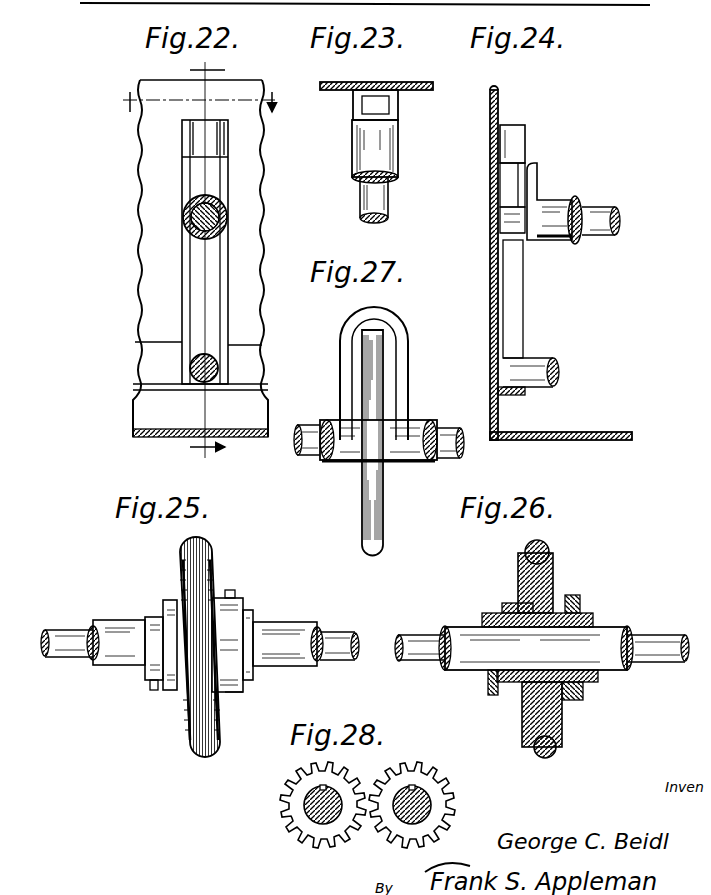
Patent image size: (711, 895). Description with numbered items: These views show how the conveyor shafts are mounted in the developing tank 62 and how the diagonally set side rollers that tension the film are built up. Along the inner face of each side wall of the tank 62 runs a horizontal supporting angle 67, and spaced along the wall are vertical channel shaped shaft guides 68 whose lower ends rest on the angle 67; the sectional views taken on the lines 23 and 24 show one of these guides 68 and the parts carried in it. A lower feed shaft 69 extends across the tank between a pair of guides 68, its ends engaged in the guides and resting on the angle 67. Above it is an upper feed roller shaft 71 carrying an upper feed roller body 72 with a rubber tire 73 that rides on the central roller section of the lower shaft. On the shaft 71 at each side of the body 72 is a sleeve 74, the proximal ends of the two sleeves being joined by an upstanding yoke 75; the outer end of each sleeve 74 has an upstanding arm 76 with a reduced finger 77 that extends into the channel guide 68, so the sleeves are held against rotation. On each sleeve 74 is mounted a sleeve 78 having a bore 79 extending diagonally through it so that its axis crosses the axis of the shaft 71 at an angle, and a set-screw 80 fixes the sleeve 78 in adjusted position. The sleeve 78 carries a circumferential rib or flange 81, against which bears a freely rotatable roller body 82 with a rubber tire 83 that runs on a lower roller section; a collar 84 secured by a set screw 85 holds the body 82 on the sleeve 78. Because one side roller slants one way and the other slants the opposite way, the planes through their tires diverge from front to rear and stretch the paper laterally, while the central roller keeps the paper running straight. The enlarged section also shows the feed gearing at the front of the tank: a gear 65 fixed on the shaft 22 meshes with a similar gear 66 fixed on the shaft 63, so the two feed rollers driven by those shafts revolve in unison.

In FIG. 28, the shaft 22 is at (318, 818).
In FIG. 22, the section line 23— 23 is at (196, 102).
In FIG. 22, the section line 24— 24 is at (187, 262).
In FIG. 22, the developing tank 62 is at (245, 163).
In FIG. 23, the developing tank 62 is at (420, 90).
In FIG. 24, the developing tank 62 is at (547, 432).
In FIG. 28, the shaft 63 is at (421, 815).
In FIG. 28, the gear 65 is at (290, 780).
In FIG. 28, the gear 66 is at (440, 790).
In FIG. 22, the supporting angle 67 is at (252, 358).
In FIG. 24, the supporting angle 67 is at (515, 395).
In FIG. 22, the channel shaped shaft guide 68 is at (185, 145).
In FIG. 23, the channel shaped shaft guide 68 is at (355, 108).
In FIG. 24, the channel shaped shaft guide 68 is at (522, 132).
In FIG. 22, the lower feed shaft 69 is at (210, 360).
In FIG. 24, the lower feed shaft 69 is at (548, 368).
In FIG. 22, the upper feed roller shaft 71 is at (226, 217).
In FIG. 23, the upper feed roller shaft 71 is at (389, 202).
In FIG. 24, the upper feed roller shaft 71 is at (600, 212).
In FIG. 27, the upper feed roller shaft 71 is at (437, 455).
In FIG. 25, the upper feed roller shaft 71 is at (63, 630).
In FIG. 26, the upper feed roller shaft 71 is at (425, 637).
In FIG. 27, the upper feed roller body 72 is at (386, 382).
In FIG. 27, the rubber tire 73 is at (376, 402).
In FIG. 22, the sleeve 74 is at (218, 203).
In FIG. 23, the sleeve 74 is at (398, 167).
In FIG. 24, the sleeve 74 is at (542, 243).
In FIG. 27, the sleeve 74 is at (328, 420).
In FIG. 25, the sleeve 74 is at (120, 620).
In FIG. 26, the sleeve 74 is at (470, 627).
In FIG. 27, the yoke 75 is at (389, 373).
In FIG. 22, the upstanding arm 76 is at (188, 178).
In FIG. 23, the upstanding arm 76 is at (398, 127).
In FIG. 24, the upstanding arm 76 is at (537, 180).
In FIG. 23, the reduced finger 77 is at (372, 108).
In FIG. 24, the reduced finger 77 is at (514, 165).
In FIG. 25, the sleeve 78 is at (252, 613).
In FIG. 26, the sleeve 78 is at (594, 619).
In FIG. 26, the bore 79 is at (598, 677).
In FIG. 25, the set-screw 80 is at (152, 690).
In FIG. 26, the set-screw 80 is at (490, 690).
In FIG. 25, the circumferential rib or flange 81 is at (163, 612).
In FIG. 26, the circumferential rib or flange 81 is at (505, 608).
In FIG. 25, the roller body 82 is at (213, 562).
In FIG. 26, the roller body 82 is at (546, 585).
In FIG. 25, the rubber tire 83 is at (198, 580).
In FIG. 26, the rubber tire 83 is at (549, 548).
In FIG. 25, the collar 84 is at (232, 692).
In FIG. 26, the collar 84 is at (570, 701).
In FIG. 25, the set screw 85 is at (233, 592).
In FIG. 26, the set screw 85 is at (576, 600).